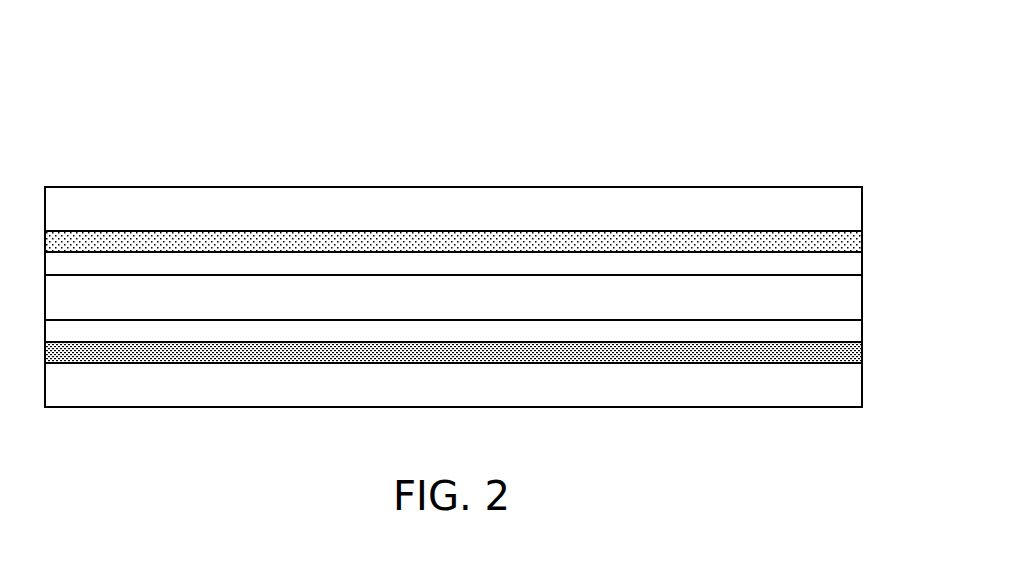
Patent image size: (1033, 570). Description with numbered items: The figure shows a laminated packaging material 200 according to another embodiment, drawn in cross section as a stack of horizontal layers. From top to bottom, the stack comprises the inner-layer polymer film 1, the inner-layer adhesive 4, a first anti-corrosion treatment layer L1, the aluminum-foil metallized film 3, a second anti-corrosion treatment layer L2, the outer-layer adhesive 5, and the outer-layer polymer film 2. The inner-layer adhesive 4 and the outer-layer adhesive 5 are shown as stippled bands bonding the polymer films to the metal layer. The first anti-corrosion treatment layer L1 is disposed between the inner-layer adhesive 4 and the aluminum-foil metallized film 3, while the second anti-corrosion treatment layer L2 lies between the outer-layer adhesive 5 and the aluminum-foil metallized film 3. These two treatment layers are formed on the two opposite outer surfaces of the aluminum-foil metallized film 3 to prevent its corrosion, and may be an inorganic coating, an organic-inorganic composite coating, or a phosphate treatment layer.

The laminated packaging material 200 is at (81, 110).
The inner-layer polymer film 1 is at (843, 212).
The inner-layer adhesive 4 is at (848, 242).
The first anti-corrosion treatment layer L1 is at (850, 265).
The aluminum-foil metallized film 3 is at (848, 298).
The second anti-corrosion treatment layer L2 is at (848, 328).
The outer-layer adhesive 5 is at (848, 350).
The outer-layer polymer film 2 is at (848, 387).